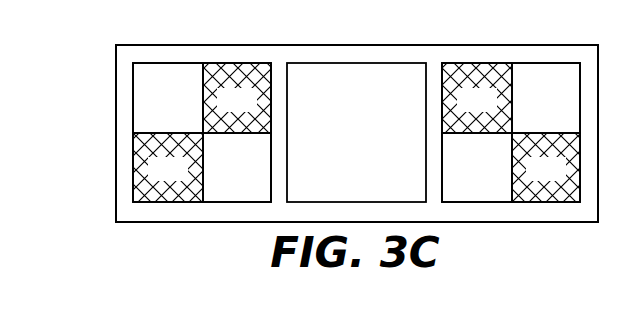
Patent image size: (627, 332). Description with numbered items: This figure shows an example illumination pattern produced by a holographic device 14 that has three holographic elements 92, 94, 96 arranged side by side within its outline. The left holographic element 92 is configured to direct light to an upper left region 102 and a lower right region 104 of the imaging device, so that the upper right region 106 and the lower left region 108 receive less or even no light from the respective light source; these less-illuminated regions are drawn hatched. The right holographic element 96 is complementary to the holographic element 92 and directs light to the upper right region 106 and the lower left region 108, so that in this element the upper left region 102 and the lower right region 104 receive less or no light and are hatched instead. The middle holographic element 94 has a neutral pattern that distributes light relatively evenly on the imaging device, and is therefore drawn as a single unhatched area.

The holographic device 14 is at (109, 52).
The holographic element 92 is at (183, 58).
The holographic element 94 is at (322, 58).
The holographic element 96 is at (482, 58).
The upper left region 102 is at (151, 109).
The lower right region 104 is at (220, 178).
The upper right region 106 is at (220, 109).
The lower left region 108 is at (151, 178).